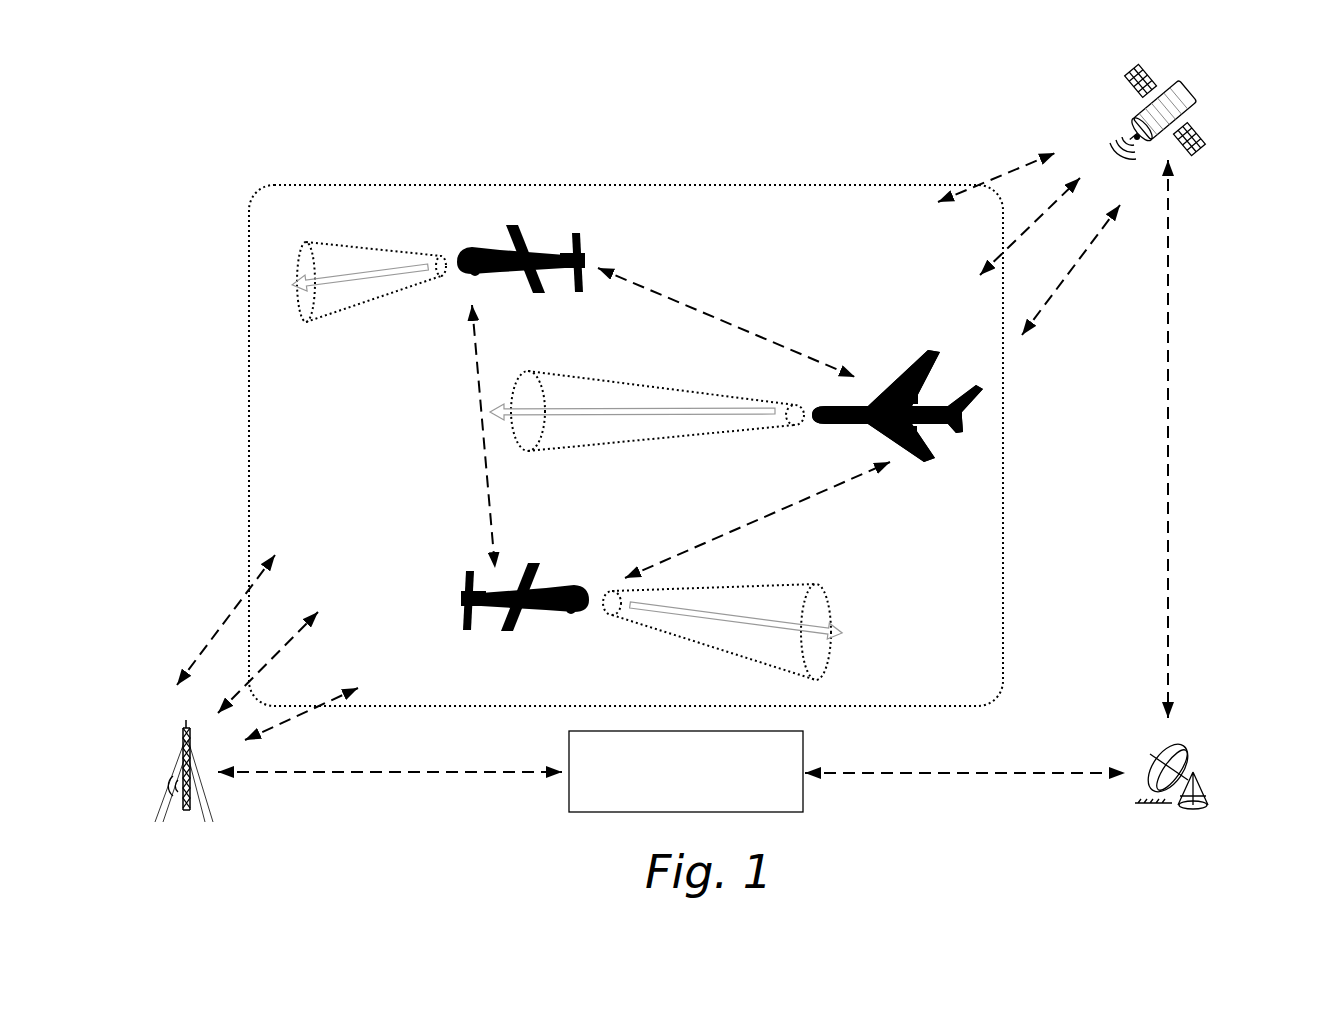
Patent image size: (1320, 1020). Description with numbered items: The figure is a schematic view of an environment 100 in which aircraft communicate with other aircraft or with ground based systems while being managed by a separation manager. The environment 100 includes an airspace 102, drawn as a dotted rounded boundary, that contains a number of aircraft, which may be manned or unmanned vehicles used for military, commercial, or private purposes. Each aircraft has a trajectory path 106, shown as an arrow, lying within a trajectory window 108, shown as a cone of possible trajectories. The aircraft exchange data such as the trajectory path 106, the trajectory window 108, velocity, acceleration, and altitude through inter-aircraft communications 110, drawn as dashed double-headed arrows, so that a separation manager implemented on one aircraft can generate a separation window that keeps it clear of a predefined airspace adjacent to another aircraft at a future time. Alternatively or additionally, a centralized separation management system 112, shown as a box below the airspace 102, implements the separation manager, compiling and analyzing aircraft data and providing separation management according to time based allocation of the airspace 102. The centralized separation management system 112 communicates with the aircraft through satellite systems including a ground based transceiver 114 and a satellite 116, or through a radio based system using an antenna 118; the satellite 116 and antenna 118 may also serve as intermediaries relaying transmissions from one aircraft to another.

The environment 100 is at (218, 118).
The airspace 102 is at (398, 185).
The trajectory path 106 is at (500, 405).
The trajectory window 108 is at (333, 243).
The inter-aircraft communications 110 is at (485, 488).
The centralized separation management system 112 is at (590, 812).
The ground based transceiver 114 is at (1205, 797).
The satellite 116 is at (1143, 117).
The antenna 118 is at (190, 810).